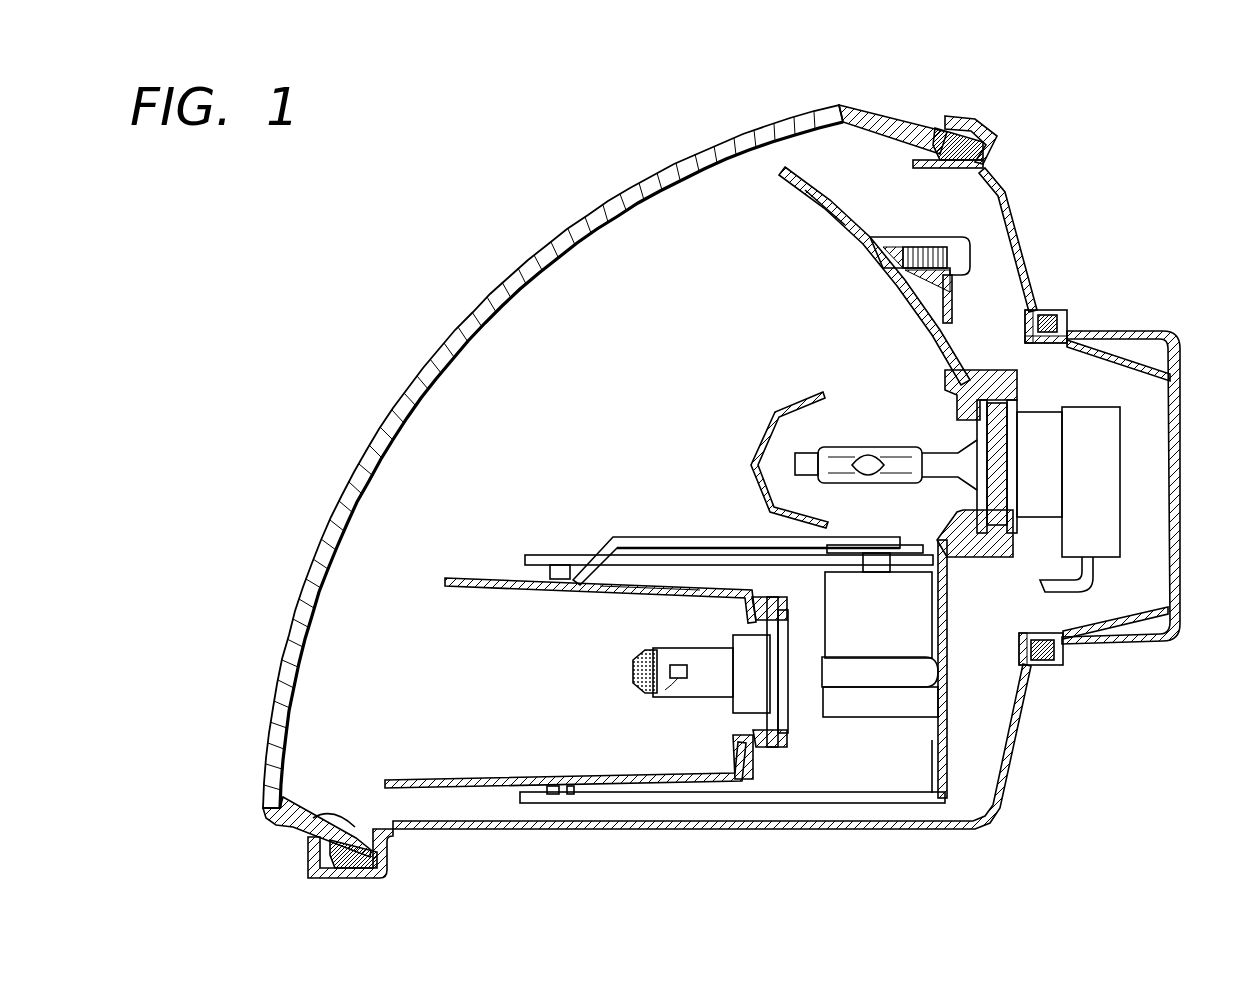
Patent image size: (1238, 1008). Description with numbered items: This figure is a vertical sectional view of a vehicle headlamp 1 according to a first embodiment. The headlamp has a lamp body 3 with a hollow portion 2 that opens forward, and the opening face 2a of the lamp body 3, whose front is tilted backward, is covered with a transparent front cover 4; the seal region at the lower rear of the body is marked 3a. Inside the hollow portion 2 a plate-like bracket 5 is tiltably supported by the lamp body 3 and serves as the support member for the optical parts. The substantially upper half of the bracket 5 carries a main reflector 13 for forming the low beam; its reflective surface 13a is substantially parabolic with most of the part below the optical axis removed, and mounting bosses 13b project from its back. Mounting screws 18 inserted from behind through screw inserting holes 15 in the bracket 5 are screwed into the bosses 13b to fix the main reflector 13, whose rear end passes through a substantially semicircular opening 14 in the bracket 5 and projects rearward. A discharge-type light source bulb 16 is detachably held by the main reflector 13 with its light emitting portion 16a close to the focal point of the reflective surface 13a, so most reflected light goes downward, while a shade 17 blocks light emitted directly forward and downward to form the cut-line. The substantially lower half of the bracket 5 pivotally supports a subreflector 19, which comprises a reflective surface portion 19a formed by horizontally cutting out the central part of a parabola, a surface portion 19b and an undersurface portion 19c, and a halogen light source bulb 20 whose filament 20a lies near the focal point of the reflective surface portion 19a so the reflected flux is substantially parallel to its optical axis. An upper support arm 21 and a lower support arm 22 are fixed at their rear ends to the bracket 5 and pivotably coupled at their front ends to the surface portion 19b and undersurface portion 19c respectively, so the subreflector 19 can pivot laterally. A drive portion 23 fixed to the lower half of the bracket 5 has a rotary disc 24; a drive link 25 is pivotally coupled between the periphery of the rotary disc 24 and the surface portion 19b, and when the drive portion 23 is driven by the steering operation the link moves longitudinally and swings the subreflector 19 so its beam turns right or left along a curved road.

The vehicle headlamp 1 is at (444, 280).
The hollow portion 2 is at (977, 787).
The opening face 2a is at (932, 158).
The lamp body 3 is at (713, 832).
The seal groove 3a is at (1023, 708).
The front cover 4 is at (408, 378).
The bracket 5 is at (957, 287).
The main reflector 13 is at (800, 195).
The reflective surface 13a is at (837, 217).
The mounting boss 13b is at (910, 237).
The opening 14 is at (957, 318).
The screw inserting hole 15 is at (975, 233).
The light source bulb 16 is at (845, 445).
The light emitting portion 16a is at (877, 460).
The shade 17 is at (773, 408).
The mounting screw 18 is at (960, 258).
The subreflector 19 is at (477, 578).
The reflective surface portion 19a is at (740, 739).
The surface portion 19b is at (640, 590).
The undersurface portion 19c is at (590, 788).
The light source bulb 20 is at (645, 655).
The light emitting portion 20a is at (656, 695).
The upper support arm 21 is at (700, 545).
The lower support arm 22 is at (670, 807).
The drive portion 23 is at (886, 704).
The rotary disc 24 is at (915, 530).
The drive link 25 is at (602, 547).